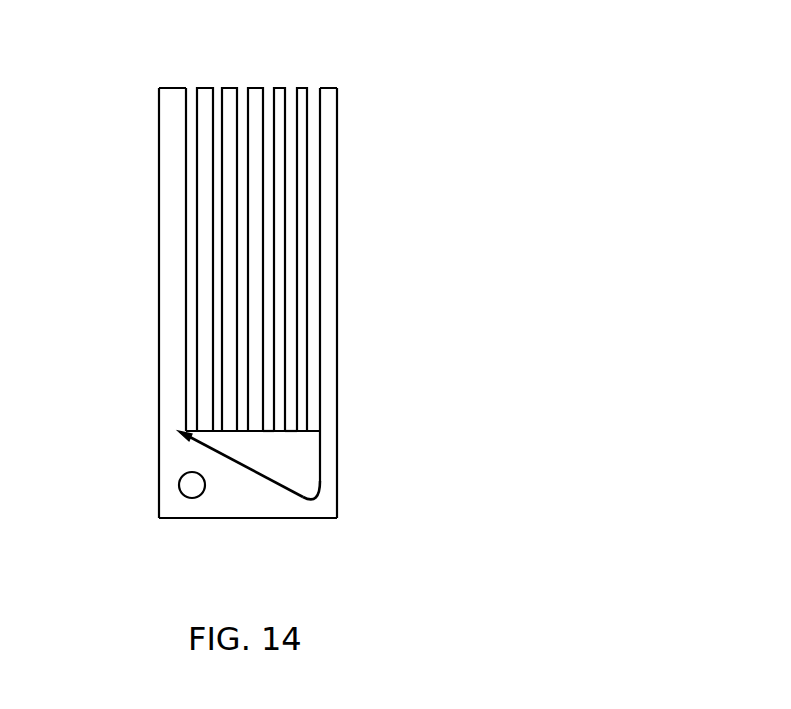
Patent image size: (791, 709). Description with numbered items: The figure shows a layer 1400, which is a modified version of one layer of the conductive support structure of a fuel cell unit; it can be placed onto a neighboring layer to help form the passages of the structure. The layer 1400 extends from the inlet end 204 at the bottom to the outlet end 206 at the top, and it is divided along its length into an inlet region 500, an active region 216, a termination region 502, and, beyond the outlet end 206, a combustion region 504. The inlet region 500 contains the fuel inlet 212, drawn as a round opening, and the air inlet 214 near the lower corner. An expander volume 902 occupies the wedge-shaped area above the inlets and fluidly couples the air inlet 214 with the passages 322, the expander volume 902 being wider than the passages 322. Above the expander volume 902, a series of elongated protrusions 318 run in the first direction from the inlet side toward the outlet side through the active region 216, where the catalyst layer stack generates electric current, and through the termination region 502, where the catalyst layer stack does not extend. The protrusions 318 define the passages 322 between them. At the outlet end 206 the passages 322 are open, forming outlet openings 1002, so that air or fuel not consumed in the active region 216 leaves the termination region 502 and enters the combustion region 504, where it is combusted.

The layer 1400 is at (343, 53).
The inlet end 204 is at (259, 519).
The outlet end 206 is at (230, 87).
The outlet openings 1002 is at (269, 87).
The active region 216 is at (143, 112).
The protrusions 318 is at (302, 167).
The passages 322 is at (288, 238).
The expander volume 902 is at (305, 466).
The air inlet 214 is at (306, 488).
The fuel inlet 212 is at (191, 487).
The combustion region 504 is at (143, 55).
The termination region 502 is at (143, 86).
The inlet region 500 is at (143, 431).